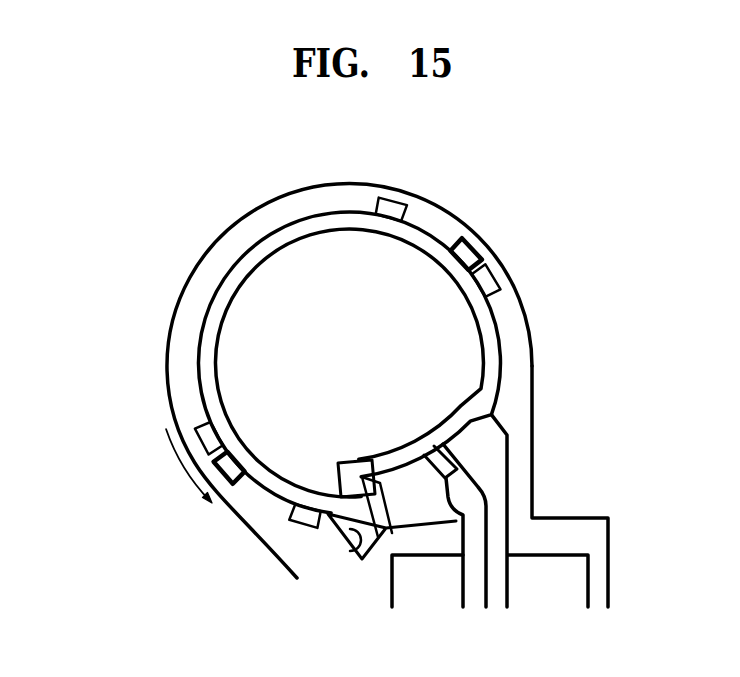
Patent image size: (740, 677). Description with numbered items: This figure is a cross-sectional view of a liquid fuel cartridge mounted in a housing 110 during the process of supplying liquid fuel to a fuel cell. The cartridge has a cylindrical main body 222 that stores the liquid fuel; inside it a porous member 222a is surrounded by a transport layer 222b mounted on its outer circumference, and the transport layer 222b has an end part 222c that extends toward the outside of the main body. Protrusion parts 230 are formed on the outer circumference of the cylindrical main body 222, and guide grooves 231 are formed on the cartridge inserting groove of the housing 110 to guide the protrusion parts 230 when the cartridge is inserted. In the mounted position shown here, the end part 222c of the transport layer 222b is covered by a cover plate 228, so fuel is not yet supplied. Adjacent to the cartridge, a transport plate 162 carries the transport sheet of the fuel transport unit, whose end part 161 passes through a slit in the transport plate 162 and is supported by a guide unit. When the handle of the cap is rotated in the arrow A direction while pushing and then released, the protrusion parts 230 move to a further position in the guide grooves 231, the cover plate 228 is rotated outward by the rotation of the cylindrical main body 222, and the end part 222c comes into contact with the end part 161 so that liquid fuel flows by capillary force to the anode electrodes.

The housing 110 is at (287, 213).
The cylindrical main body 222 is at (199, 378).
The porous member 222a is at (322, 371).
The transport layer 222b is at (285, 486).
The end part of the transport layer 222c is at (347, 548).
The cover plate 228 is at (378, 527).
The protrusion parts 230 is at (461, 258).
The guide grooves 231 is at (412, 211).
The end part of the transport sheet 161 is at (450, 460).
The transport plate 162 is at (477, 490).
The arrow direction A is at (187, 472).